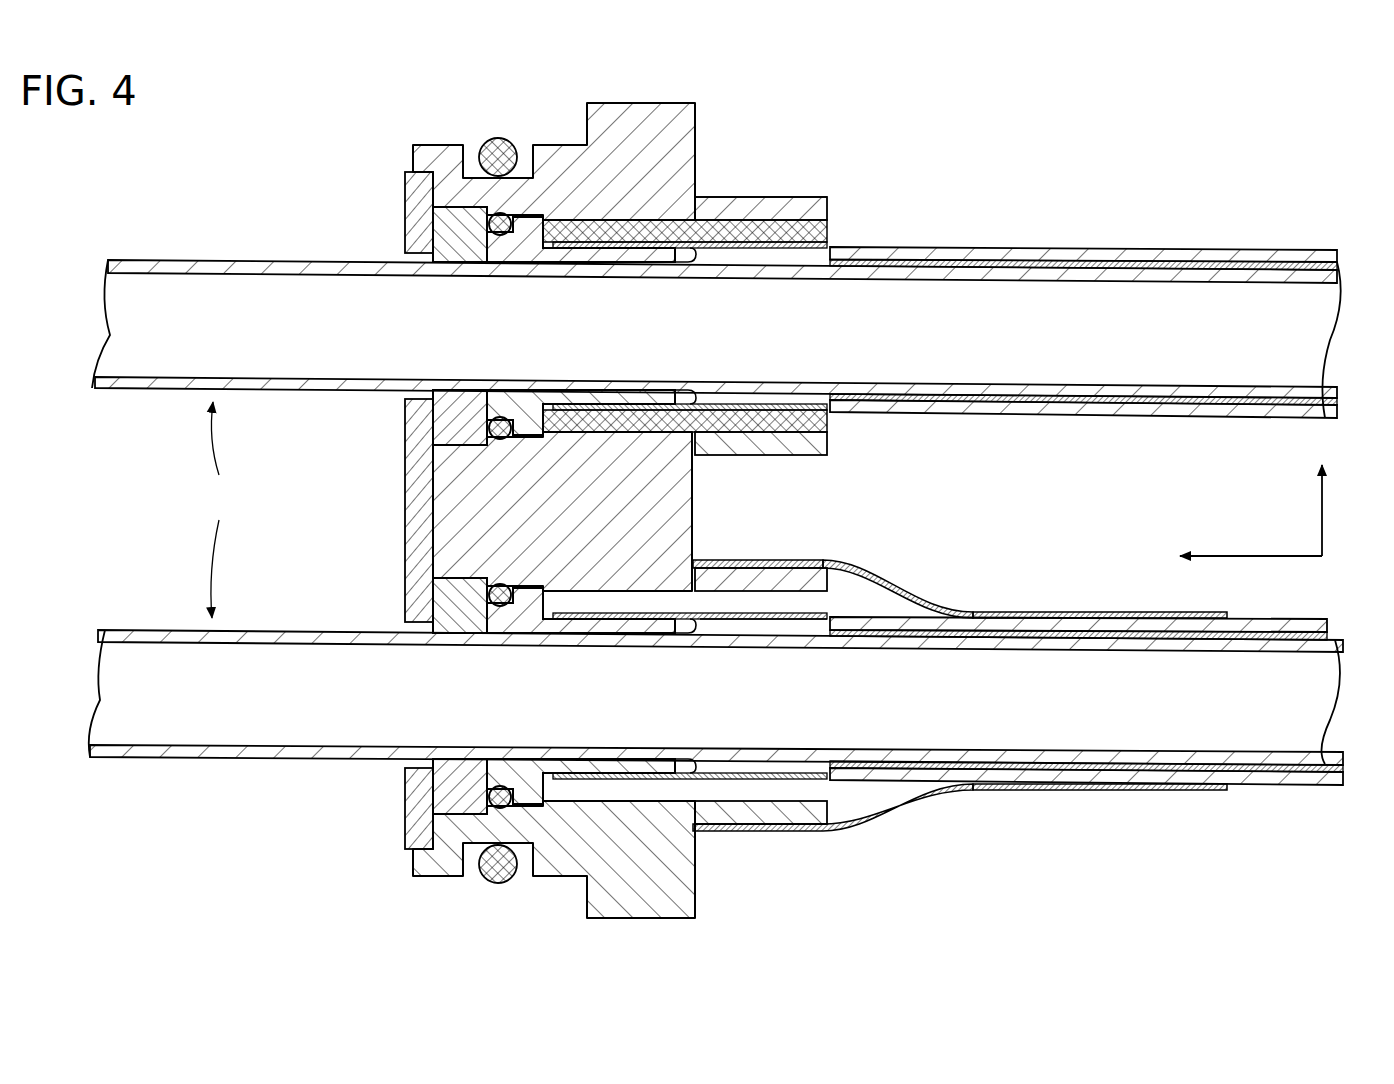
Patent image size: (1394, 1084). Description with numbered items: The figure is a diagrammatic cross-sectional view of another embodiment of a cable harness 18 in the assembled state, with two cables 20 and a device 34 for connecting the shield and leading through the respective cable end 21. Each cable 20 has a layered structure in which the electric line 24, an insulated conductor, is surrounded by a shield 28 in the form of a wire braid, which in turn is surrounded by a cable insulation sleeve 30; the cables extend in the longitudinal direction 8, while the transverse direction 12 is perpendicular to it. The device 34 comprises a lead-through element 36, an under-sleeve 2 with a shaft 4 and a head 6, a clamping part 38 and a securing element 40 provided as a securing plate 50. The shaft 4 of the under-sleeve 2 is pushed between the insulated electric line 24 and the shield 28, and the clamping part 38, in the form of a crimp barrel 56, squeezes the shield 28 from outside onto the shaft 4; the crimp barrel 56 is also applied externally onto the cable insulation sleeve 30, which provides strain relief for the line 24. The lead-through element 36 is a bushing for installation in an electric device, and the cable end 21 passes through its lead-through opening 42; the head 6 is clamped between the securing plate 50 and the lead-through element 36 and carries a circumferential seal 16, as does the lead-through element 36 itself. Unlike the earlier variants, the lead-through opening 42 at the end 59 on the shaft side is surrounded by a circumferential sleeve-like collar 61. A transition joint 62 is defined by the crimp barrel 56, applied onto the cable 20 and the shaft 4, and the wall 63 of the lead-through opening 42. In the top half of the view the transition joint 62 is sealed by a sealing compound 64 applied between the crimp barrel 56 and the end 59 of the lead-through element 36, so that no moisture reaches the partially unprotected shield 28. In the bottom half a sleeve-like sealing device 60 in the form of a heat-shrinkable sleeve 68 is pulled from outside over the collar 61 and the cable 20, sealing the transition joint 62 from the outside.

The under-sleeve 2 is at (575, 292).
The shaft 4 is at (634, 262).
The head 6 is at (542, 262).
The longitudinal direction 8 is at (1247, 556).
The transverse direction 12 is at (1322, 503).
The seal 16 is at (478, 148).
The cable harness 18 is at (458, 504).
The cable 20 is at (1096, 503).
The cable end 21 is at (223, 510).
The electric line 24 is at (1220, 328).
The shield 28 is at (1165, 262).
The cable insulation sleeve 30 is at (1110, 247).
The device 34 is at (492, 661).
The lead-through element 36 is at (598, 132).
The clamping part 38 is at (836, 240).
The securing element 40 is at (380, 534).
The lead-through opening 42 is at (960, 538).
The securing plate 50 is at (415, 457).
The crimp barrel 56 is at (796, 250).
The end on the shaft side 59 is at (722, 176).
The sealing device 60 is at (1005, 596).
The collar 61 is at (800, 205).
The transition joint 62 is at (800, 618).
The wall 63 is at (688, 212).
The sealing compound 64 is at (742, 222).
The heat-shrinkable sleeve 68 is at (830, 840).